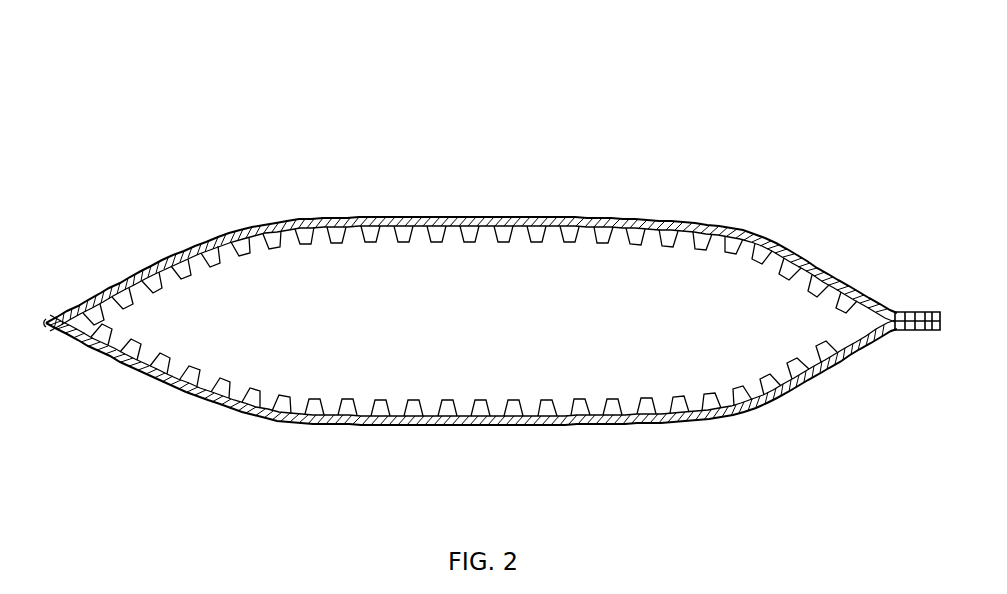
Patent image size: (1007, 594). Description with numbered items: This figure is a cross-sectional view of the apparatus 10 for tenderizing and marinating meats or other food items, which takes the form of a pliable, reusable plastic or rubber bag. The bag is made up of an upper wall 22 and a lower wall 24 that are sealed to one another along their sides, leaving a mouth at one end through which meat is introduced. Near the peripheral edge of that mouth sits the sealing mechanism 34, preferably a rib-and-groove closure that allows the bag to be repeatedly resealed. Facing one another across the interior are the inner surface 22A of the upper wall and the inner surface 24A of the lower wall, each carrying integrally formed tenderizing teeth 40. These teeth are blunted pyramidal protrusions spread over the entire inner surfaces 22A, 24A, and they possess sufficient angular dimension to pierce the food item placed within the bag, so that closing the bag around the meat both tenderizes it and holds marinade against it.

The apparatus 10 is at (460, 118).
The upper wall 22 is at (633, 218).
The inner surface of upper wall 22A is at (490, 228).
The lower wall 24 is at (412, 426).
The inner surface of lower wall 24A is at (563, 410).
The tenderizing teeth 40 is at (248, 396).
The sealing mechanism 34 is at (910, 332).